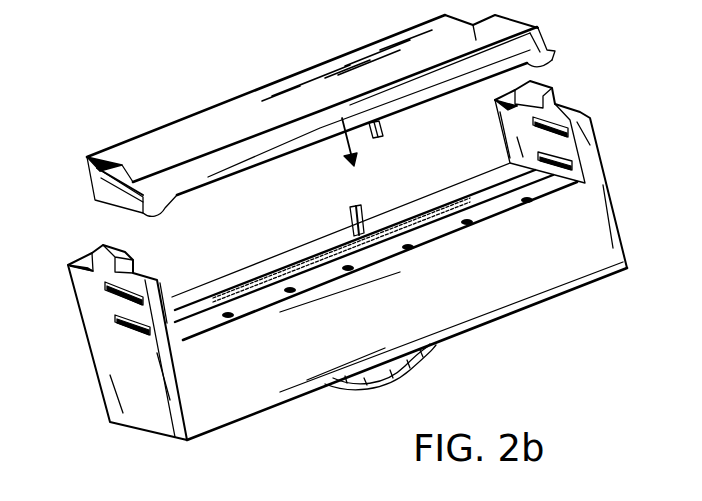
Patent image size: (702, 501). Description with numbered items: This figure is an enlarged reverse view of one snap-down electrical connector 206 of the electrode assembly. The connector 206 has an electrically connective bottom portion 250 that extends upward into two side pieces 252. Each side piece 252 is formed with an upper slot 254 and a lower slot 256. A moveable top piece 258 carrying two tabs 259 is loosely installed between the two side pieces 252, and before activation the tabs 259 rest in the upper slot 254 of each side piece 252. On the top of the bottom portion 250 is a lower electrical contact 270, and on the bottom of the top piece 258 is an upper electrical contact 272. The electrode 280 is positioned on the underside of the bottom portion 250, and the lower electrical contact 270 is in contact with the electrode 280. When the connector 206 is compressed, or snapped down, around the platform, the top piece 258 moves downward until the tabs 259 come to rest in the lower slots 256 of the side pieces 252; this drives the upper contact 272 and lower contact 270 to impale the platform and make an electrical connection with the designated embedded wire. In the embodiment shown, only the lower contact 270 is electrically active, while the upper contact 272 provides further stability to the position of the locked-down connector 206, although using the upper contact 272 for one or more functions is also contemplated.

The snap-down electrical connector 206 is at (621, 350).
The bottom portion 250 is at (220, 427).
The side piece 252 is at (110, 400).
The upper slot 254 is at (106, 289).
The lower slot 256 is at (131, 335).
The moveable top piece 258 is at (201, 151).
The tab 259 is at (97, 201).
The lower electrical contact 270 is at (347, 216).
The upper electrical contact 272 is at (384, 130).
The electrode 280 is at (411, 370).